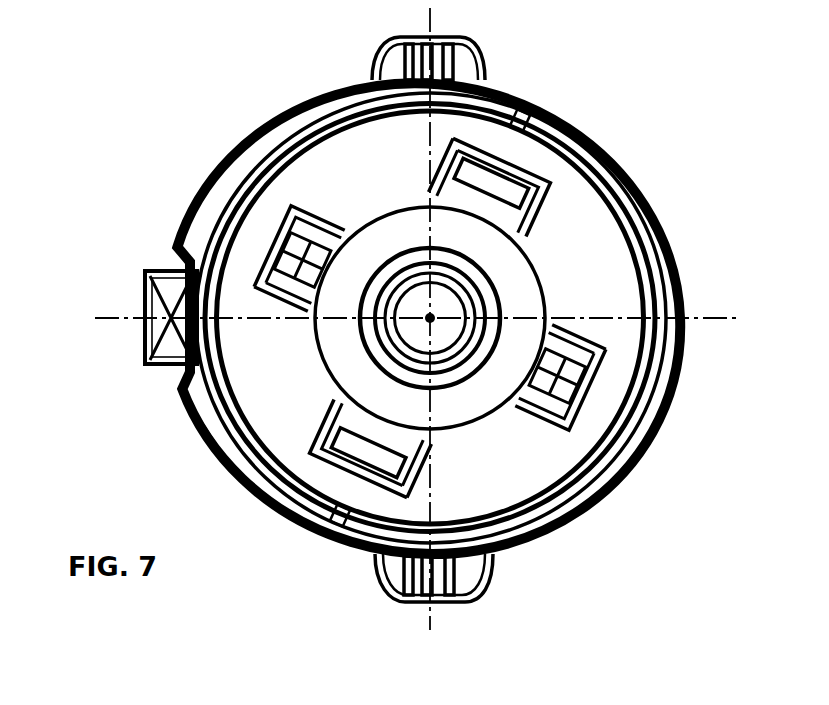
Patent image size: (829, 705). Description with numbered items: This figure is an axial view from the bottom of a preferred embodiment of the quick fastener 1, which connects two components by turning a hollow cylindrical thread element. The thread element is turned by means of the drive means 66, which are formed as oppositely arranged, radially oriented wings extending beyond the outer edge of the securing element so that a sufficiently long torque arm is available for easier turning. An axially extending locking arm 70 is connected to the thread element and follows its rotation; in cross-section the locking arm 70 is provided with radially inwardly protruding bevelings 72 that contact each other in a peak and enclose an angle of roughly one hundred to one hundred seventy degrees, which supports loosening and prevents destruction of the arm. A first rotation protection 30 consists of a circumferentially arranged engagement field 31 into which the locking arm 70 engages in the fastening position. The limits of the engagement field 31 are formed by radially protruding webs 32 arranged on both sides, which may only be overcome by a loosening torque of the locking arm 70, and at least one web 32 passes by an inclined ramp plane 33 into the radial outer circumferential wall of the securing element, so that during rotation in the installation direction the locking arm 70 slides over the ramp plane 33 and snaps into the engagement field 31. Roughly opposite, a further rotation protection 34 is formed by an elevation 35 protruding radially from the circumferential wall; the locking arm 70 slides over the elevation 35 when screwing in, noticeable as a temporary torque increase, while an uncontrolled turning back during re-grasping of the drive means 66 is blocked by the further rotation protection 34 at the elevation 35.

The quick fastener 1 is at (358, 2).
The first rotation protection 30 is at (180, 250).
The engagement field 31 is at (165, 381).
The web 32 is at (175, 398).
The ramp plane 33 is at (212, 452).
The further rotation protection 34 is at (686, 258).
The elevation 35 is at (680, 292).
The drive means 66 is at (468, 65).
The locking arm 70 is at (147, 276).
The beveling 72 is at (150, 333).